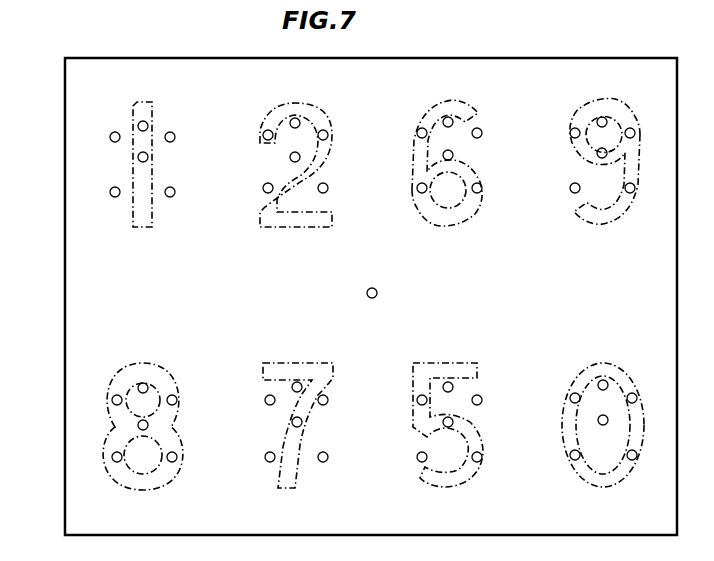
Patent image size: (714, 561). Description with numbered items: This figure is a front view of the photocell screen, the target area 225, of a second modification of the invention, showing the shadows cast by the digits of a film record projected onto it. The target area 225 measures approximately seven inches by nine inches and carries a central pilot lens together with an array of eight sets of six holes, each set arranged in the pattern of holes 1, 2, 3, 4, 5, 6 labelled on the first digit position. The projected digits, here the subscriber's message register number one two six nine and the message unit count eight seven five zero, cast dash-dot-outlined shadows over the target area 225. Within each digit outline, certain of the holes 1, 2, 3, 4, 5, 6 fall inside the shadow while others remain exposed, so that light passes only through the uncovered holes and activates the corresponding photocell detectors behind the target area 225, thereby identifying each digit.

The first light source position 1 is at (116, 128).
The second light source position 2 is at (171, 128).
The third light source position 3 is at (170, 183).
The fourth light source position 4 is at (115, 183).
The fifth light source position 5 is at (143, 117).
The sixth light source position 6 is at (142, 166).
The target area 225 is at (65, 254).